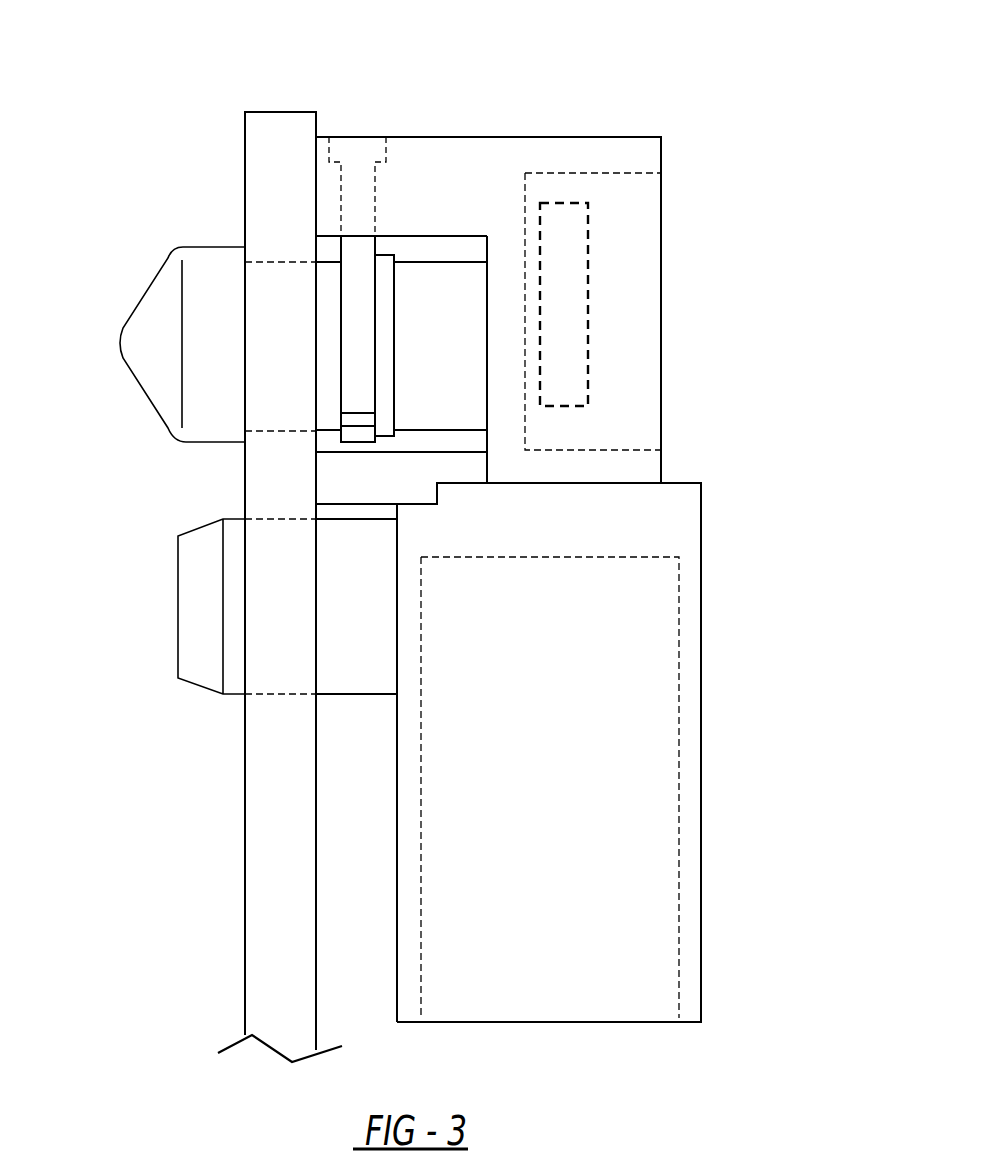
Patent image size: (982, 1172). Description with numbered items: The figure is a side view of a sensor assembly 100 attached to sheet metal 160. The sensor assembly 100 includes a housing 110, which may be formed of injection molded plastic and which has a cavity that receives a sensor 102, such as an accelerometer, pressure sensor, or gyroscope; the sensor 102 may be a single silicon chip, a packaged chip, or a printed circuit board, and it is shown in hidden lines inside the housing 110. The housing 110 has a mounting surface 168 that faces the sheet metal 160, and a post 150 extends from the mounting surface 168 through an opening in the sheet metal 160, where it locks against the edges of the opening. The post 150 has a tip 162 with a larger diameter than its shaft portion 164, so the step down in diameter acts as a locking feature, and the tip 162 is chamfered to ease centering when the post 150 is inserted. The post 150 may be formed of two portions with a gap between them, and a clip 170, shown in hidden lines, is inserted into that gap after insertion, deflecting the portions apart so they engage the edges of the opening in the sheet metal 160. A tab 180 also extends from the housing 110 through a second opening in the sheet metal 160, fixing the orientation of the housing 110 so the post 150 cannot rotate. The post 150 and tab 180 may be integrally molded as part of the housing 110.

The sensor assembly 100 is at (682, 277).
The sensor 102 is at (571, 364).
The housing 110 is at (458, 172).
The post 150 is at (164, 302).
The sheet metal 160 is at (280, 127).
The tip 162 is at (217, 350).
The shaft portion 164 is at (435, 335).
The mounting surface 168 is at (487, 402).
The clip 170 is at (363, 152).
The tab 180 is at (207, 605).